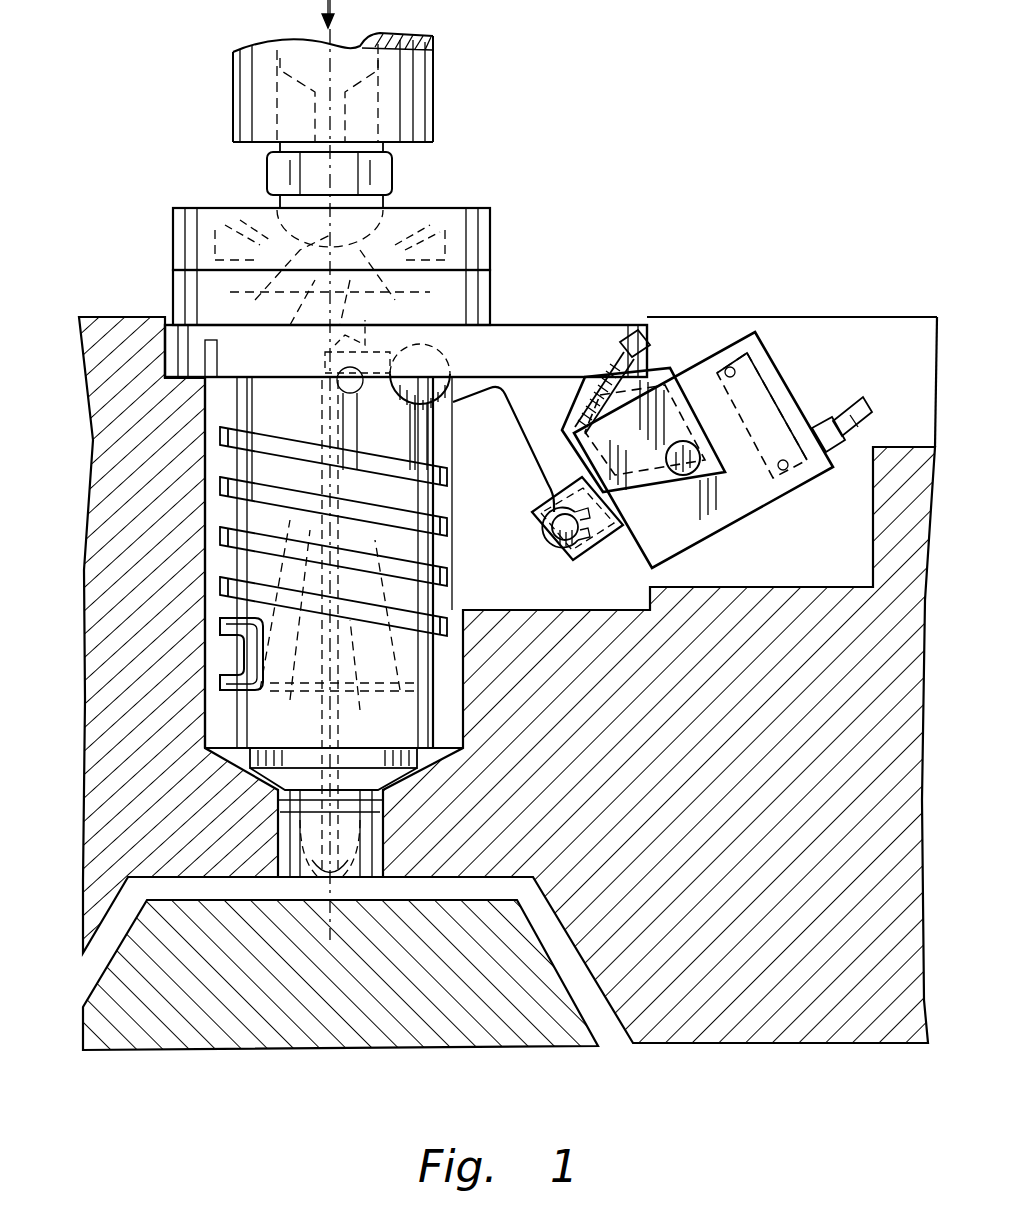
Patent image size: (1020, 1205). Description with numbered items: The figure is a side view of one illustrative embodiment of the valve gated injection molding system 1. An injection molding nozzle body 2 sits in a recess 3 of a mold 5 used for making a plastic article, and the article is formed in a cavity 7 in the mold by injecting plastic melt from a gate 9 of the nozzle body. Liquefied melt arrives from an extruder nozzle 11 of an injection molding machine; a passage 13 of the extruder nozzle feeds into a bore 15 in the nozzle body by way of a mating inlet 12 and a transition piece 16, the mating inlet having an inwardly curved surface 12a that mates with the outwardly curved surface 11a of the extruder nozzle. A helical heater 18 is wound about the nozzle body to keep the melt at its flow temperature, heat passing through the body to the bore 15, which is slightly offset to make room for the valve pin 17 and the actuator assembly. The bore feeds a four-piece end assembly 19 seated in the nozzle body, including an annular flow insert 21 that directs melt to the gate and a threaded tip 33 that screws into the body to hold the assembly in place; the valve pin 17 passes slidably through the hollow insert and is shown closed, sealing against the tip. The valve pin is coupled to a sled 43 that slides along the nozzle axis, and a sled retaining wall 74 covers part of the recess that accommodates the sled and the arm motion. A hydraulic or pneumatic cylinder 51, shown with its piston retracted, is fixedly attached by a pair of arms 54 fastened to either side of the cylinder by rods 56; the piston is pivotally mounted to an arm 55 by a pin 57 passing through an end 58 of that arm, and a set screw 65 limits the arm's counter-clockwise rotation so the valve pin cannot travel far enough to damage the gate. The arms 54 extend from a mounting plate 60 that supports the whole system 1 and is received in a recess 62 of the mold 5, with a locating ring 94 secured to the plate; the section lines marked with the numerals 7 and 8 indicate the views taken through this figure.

The injection molding system 1 is at (578, 50).
The injection molding nozzle body 2 is at (255, 510).
The recess 3 is at (217, 725).
The mold 5 is at (803, 1040).
The cavity 7 is at (605, 1025).
The section line 8 is at (150, 380).
The gate 9 is at (330, 875).
The extruder nozzle 11 is at (393, 205).
The outwardly curved surface 11a is at (390, 213).
The mating inlet 12 is at (470, 242).
The inwardly curved surface 12a is at (283, 207).
The passage 13 is at (268, 172).
The bore 15 is at (250, 398).
The transition piece 16 is at (250, 292).
The valve pin 17 is at (430, 550).
The helical heater 18 is at (440, 578).
The four-piece end assembly 19 is at (410, 778).
The annular flow insert 21 is at (405, 693).
The tip 33 is at (360, 872).
The sled 43 is at (432, 449).
The hydraulic or pneumatic cylinder 51 is at (757, 330).
The arms 54 is at (658, 375).
The arm 55 is at (525, 395).
The rods 56 is at (690, 462).
The pin 57 is at (548, 530).
The end 58 is at (562, 548).
The mounting plate 60 is at (540, 345).
The recess 62 is at (182, 332).
The set screw 65 is at (602, 335).
The sled retaining wall 74 is at (437, 455).
The locating ring 94 is at (492, 215).